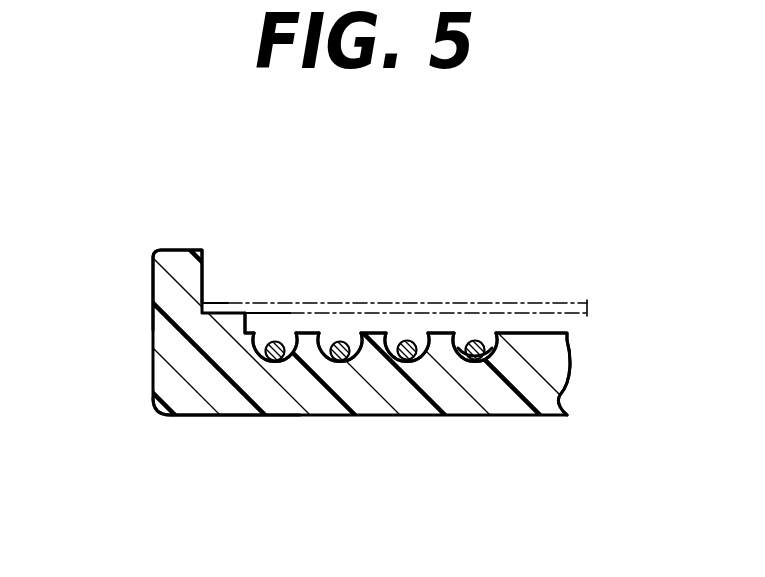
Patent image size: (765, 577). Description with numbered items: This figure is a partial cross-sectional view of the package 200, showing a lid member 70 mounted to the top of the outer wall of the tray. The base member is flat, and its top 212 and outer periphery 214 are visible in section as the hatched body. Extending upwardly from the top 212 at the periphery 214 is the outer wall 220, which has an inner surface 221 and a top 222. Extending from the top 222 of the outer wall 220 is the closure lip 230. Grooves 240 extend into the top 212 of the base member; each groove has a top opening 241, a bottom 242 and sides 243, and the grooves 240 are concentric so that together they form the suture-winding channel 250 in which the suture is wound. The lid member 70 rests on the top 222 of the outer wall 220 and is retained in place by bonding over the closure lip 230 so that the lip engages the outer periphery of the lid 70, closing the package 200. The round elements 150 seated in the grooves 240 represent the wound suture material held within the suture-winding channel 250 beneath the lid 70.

The package 200 is at (238, 447).
The top 212 is at (543, 333).
The outer periphery 214 is at (166, 414).
The outer wall 220 is at (232, 323).
The inner surface 221 is at (246, 322).
The top 222 is at (210, 303).
The closure lip 230 is at (181, 267).
The grooves 240 is at (485, 356).
The top opening 241 is at (423, 334).
The bottoms 242 is at (477, 361).
The sides 243 is at (488, 335).
The suture-winding channel 250 is at (405, 323).
The seal ring 150 is at (339, 362).
The lid member 70 is at (542, 301).